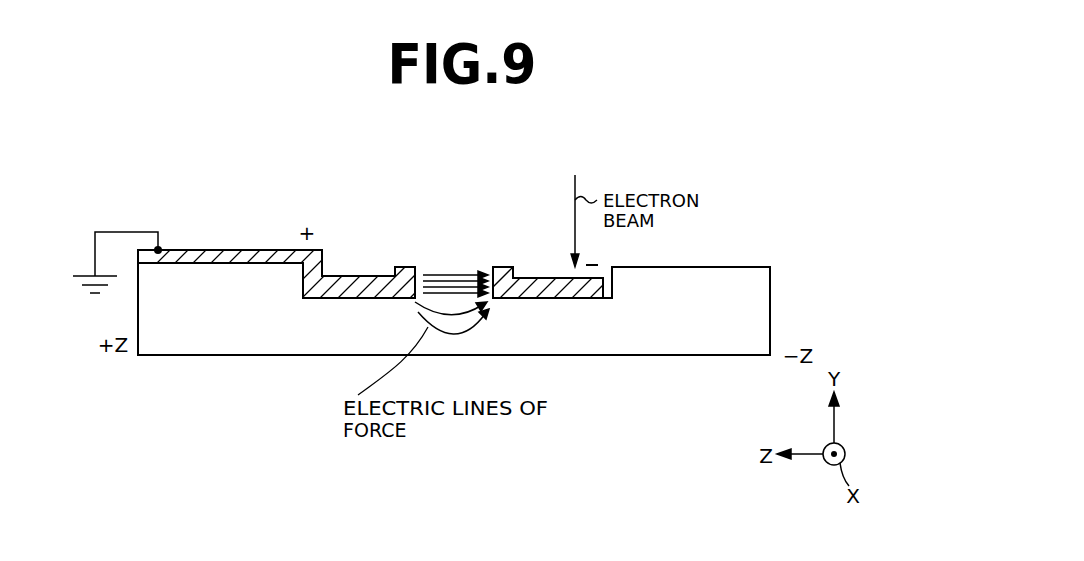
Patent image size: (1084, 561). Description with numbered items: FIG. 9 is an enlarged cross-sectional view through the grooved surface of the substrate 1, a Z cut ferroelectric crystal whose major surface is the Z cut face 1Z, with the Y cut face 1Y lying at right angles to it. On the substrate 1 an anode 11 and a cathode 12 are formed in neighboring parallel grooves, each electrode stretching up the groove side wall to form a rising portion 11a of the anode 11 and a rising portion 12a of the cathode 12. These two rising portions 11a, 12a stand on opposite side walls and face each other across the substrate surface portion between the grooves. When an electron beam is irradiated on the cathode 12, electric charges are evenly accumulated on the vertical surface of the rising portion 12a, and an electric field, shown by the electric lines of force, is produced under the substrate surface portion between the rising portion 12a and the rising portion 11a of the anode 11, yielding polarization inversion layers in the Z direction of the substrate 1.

The substrate 1 is at (615, 350).
The Y cut face 1Y is at (733, 263).
The Z cut face 1Z is at (782, 299).
The anode 11 is at (226, 250).
The rising portion 11a is at (405, 264).
The cathode 12 is at (542, 279).
The rising portion 12a is at (502, 266).